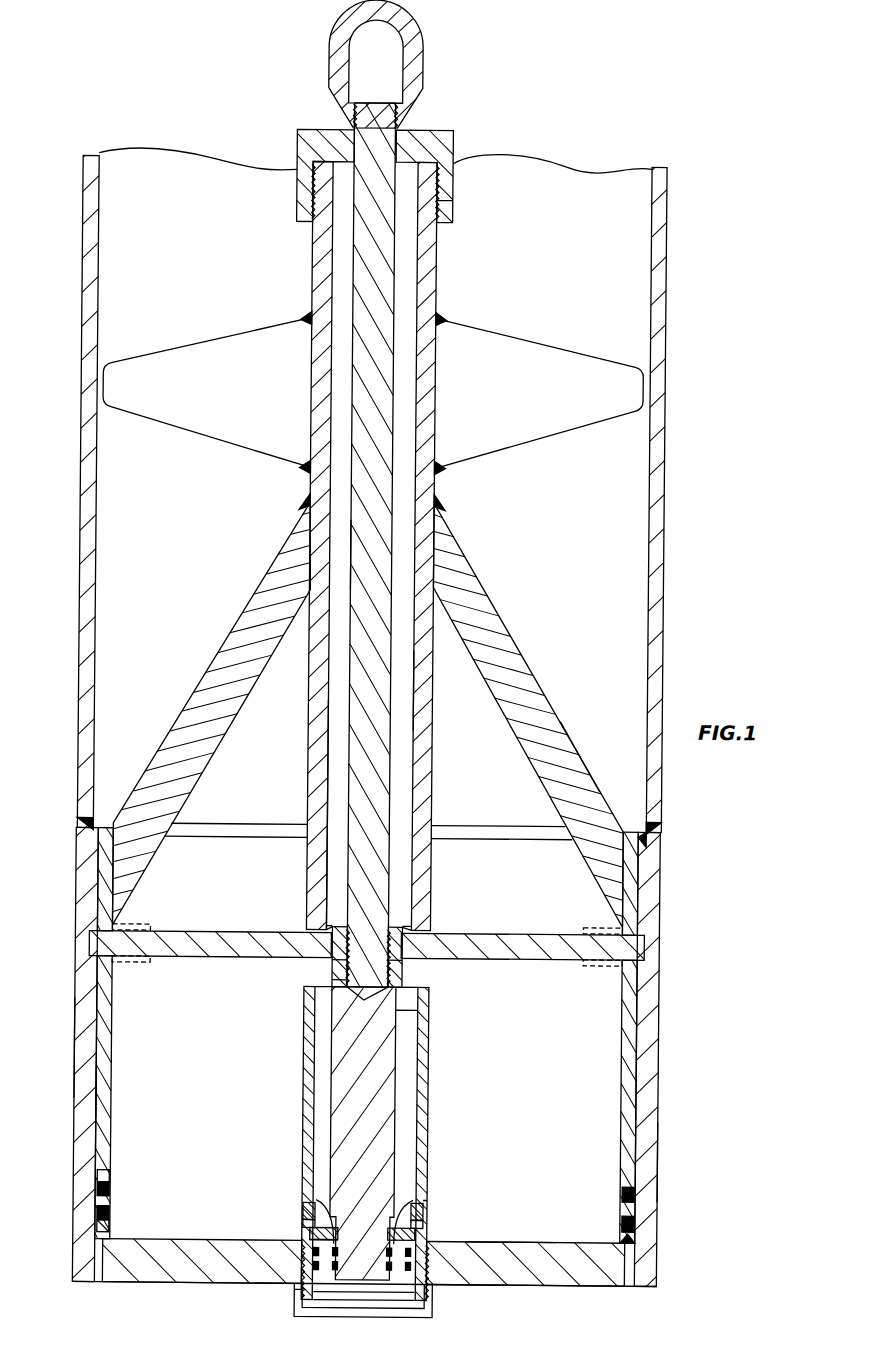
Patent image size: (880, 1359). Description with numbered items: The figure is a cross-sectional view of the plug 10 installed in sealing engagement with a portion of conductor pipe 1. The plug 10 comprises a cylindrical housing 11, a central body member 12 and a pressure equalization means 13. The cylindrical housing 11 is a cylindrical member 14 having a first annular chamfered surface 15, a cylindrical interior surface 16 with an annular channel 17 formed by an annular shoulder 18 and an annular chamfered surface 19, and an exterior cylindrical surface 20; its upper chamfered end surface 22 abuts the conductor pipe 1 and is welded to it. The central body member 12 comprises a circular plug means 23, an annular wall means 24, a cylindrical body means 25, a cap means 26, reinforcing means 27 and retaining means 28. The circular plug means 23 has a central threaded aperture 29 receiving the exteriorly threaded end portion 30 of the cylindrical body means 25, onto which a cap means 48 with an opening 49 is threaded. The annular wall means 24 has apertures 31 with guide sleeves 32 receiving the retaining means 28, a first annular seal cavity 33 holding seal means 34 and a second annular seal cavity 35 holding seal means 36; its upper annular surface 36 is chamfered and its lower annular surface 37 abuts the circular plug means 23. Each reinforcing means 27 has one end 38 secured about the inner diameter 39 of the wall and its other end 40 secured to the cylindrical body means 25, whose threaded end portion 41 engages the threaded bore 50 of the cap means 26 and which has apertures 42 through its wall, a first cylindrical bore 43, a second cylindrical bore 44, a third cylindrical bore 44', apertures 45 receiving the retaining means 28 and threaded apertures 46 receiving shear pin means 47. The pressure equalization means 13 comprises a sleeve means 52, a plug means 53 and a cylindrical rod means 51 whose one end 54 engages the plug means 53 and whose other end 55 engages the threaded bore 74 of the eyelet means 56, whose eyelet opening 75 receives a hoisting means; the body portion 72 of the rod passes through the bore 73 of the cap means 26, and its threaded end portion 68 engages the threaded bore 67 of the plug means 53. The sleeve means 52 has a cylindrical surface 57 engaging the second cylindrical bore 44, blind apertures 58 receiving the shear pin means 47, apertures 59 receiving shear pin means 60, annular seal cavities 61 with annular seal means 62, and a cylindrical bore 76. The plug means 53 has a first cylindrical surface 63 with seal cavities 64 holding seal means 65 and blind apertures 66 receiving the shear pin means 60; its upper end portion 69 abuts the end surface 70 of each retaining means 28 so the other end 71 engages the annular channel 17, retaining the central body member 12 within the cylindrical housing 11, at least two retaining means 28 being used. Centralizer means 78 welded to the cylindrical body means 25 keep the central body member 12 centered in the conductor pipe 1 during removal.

The conductor pipe 1 is at (663, 296).
The plug 10 is at (376, 717).
The cylindrical housing 11 is at (652, 1036).
The central body member 12 is at (590, 760).
The pressure equalization means 13 is at (506, 1216).
The cylindrical member 14 is at (642, 1102).
The first annular chamfered surface 15 is at (90, 830).
The cylindrical interior surface 16 is at (97, 1046).
The annular channel 17 is at (645, 941).
The annular shoulder 18 is at (645, 966).
The annular chamfered surface 19 is at (640, 925).
The exterior cylindrical surface 20 is at (661, 1159).
The upper chamfered end surface 22 is at (660, 829).
The circular plug means 23 is at (152, 1268).
The annular wall means 24 is at (100, 1091).
The cylindrical body means 25 is at (318, 777).
The cap means 26 is at (450, 212).
The reinforcing means 27 is at (369, 710).
The retaining means 28 is at (210, 943).
The central threaded aperture 29 is at (305, 1262).
The exteriorly threaded end portion 30 is at (433, 1262).
The apertures 31 is at (113, 966).
The guide sleeves 32 is at (126, 928).
The first annular seal cavity 33 is at (113, 1229).
The seal means 34 is at (113, 1214).
The second annular seal cavity 35 is at (113, 1190).
The seal means 36 is at (650, 851).
The lower annular surface 37 is at (634, 1240).
The one end 38 is at (128, 860).
The inner diameter 39 is at (114, 1040).
The other end 40 is at (300, 548).
The threaded end portion 41 is at (364, 546).
The apertures 42 is at (368, 1146).
The first cylindrical bore 43 is at (420, 690).
The second cylindrical bore 44 is at (241, 1229).
The third cylindrical bore 44' is at (432, 1023).
The apertures 45 is at (316, 928).
The threaded apertures 46 is at (312, 1222).
The threaded shear pin means 47 is at (433, 1226).
The cap means 48 is at (350, 1312).
The opening 49 is at (380, 1310).
The threaded bore 50 is at (440, 190).
The cylindrical rod means 51 is at (378, 531).
The sleeve means 52 is at (304, 1292).
The plug means 53 is at (399, 1134).
The one end 54 is at (343, 986).
The other end 55 is at (397, 118).
The eyelet means 56 is at (395, 64).
The cylindrical surface 57 is at (428, 1240).
The blind apertures 58 is at (308, 1206).
The apertures 59 is at (309, 1226).
The shear pin means 60 is at (318, 1240).
The annular seal cavities 61 is at (320, 1270).
The annular seal means 62 is at (340, 1272).
The first cylindrical surface 63 is at (330, 1200).
The seal cavities 64 is at (340, 1254).
The seal means 65 is at (343, 1268).
The blind apertures 66 is at (341, 1228).
The threaded bore 67 is at (406, 968).
The threaded end portion 68 is at (355, 925).
The upper end portion 69 is at (344, 964).
The end surface 70 is at (330, 936).
The other end 71 is at (359, 951).
The body portion 72 is at (386, 545).
The bore 73 is at (373, 175).
The threaded bore 74 is at (344, 116).
The eyelet opening 75 is at (391, 68).
The cylindrical bore 76 is at (422, 1200).
The centralizer means 78 is at (372, 393).